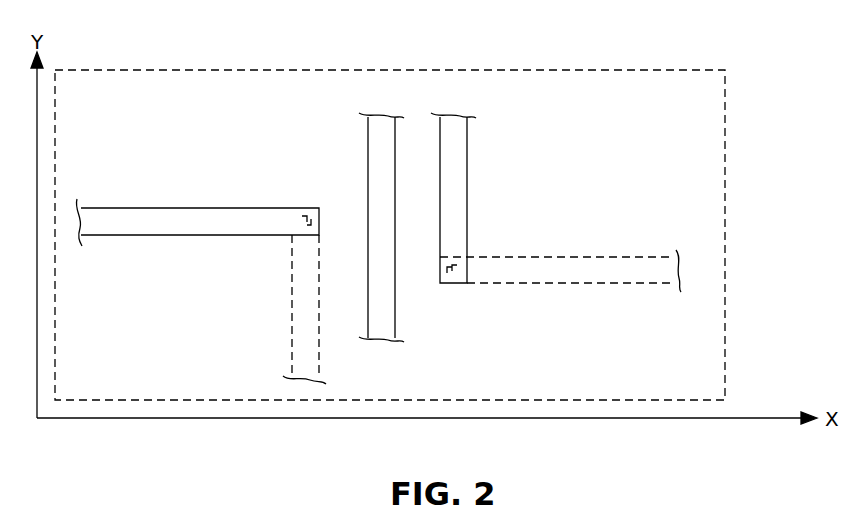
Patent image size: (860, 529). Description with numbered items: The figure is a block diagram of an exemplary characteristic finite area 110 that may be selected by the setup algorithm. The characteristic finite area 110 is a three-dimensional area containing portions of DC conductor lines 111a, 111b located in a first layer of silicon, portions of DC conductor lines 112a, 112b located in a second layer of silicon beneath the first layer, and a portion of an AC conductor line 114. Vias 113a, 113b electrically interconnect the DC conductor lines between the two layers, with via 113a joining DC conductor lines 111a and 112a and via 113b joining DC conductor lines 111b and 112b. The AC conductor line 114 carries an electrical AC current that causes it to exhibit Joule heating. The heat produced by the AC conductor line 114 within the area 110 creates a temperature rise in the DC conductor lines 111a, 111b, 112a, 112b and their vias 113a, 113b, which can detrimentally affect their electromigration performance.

The characteristic finite area 110 is at (617, 70).
The DC conductor line 111a is at (228, 208).
The DC conductor line 111b is at (476, 193).
The DC conductor line 112a is at (292, 301).
The DC conductor line 112b is at (558, 285).
The via 113a is at (305, 215).
The via 113b is at (447, 285).
The AC conductor line 114 is at (367, 163).